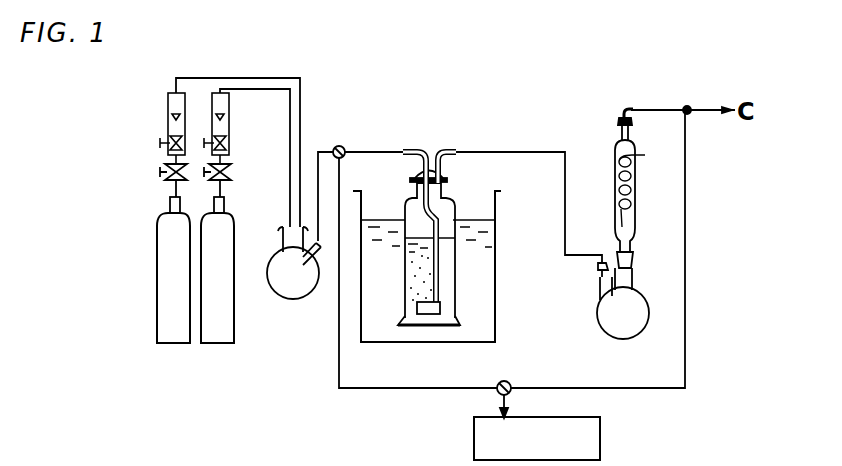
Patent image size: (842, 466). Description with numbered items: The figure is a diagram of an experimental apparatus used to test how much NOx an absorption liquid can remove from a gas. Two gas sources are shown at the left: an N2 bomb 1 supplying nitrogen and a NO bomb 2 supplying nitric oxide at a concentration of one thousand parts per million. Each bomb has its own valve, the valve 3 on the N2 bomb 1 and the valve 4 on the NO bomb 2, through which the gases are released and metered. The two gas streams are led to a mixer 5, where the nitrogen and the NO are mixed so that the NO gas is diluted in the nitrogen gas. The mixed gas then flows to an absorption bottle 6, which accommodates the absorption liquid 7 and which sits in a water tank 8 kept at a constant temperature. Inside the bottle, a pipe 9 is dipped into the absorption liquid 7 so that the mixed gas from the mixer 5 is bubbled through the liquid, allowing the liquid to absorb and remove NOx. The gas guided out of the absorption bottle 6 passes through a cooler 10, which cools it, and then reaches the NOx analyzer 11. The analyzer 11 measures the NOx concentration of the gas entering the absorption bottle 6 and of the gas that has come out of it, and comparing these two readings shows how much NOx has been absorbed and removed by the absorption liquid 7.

The N2 bomb 1 is at (157, 313).
The NO bomb 2 is at (252, 313).
The valve 3 is at (166, 177).
The valve 4 is at (227, 176).
The mixer 5 is at (303, 284).
The absorption bottle 6 is at (455, 284).
The absorption liquid 7 is at (425, 254).
The water tank of constant temperature 8 is at (495, 322).
The pipe 9 is at (422, 314).
The cooler 10 is at (628, 322).
The NOx analyzer 11 is at (600, 427).